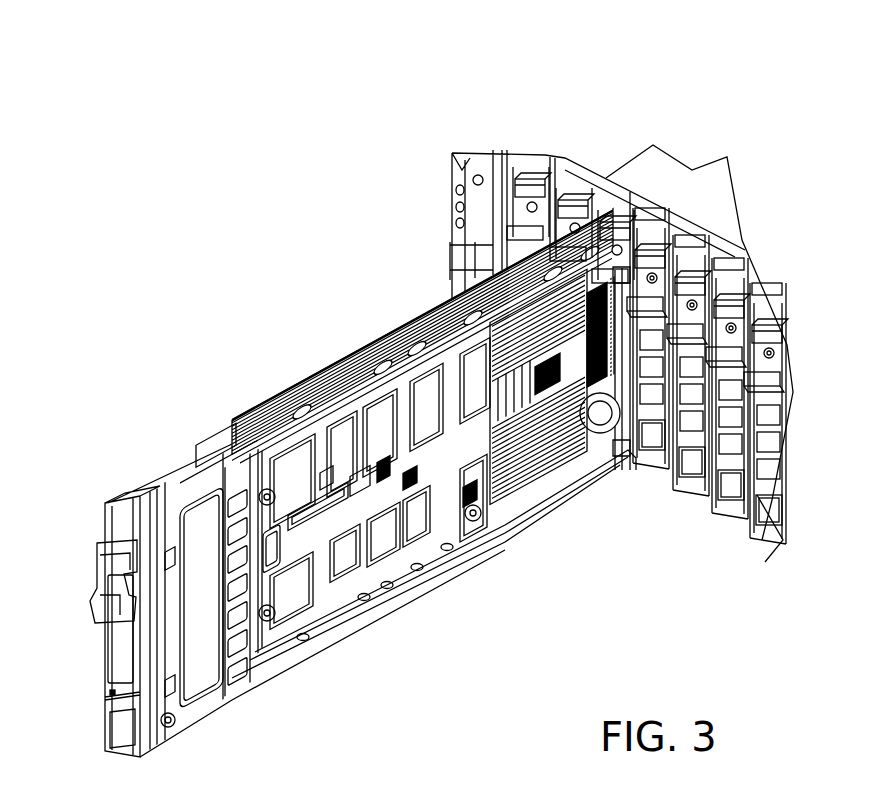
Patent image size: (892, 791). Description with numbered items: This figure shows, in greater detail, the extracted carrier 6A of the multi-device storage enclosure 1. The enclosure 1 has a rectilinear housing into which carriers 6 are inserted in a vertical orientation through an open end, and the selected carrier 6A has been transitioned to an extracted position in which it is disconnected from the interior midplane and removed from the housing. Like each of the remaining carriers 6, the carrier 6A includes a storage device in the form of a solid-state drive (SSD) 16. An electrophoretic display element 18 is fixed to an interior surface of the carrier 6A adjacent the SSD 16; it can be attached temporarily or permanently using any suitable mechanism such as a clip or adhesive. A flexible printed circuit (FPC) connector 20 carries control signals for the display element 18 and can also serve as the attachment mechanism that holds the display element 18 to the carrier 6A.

The multi-device storage enclosure 1 is at (390, 208).
The carrier 6 is at (719, 505).
The selected carrier 6A is at (164, 445).
The solid-state drive (SSD) 16 is at (413, 521).
The electrophoretic display element 18 is at (330, 523).
The flexible printed circuit (FPC) connector 20 is at (280, 548).